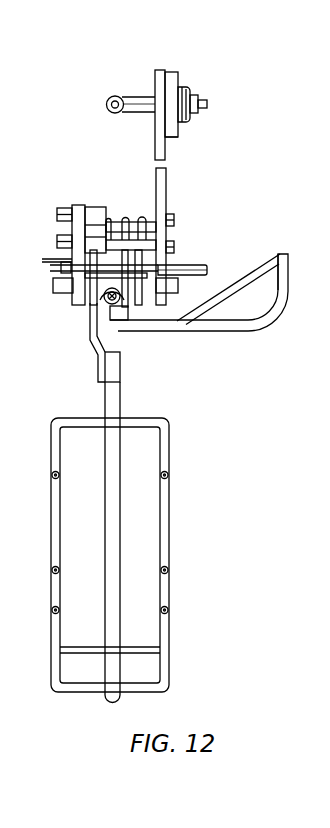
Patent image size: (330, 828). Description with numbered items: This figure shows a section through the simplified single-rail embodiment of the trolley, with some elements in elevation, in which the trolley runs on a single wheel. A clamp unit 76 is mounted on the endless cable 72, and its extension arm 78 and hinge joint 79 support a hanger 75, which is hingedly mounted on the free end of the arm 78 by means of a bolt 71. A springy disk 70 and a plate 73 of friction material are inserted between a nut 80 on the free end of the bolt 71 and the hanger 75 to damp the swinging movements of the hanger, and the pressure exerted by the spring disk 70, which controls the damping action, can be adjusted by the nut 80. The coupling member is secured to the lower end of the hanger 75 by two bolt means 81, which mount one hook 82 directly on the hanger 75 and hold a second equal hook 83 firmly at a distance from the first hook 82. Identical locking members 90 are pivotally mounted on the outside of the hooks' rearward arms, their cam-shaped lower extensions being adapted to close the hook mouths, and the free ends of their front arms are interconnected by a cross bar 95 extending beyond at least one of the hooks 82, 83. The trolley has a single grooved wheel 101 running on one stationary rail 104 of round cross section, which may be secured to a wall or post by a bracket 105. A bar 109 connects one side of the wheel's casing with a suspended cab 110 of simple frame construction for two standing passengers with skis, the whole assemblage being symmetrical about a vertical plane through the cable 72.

The springy disk 70 is at (186, 124).
The bolt 71 is at (207, 108).
The endless cable 72 is at (109, 110).
The plate of friction material 73 is at (176, 130).
The hanger 75 is at (166, 184).
The clamp unit 76 is at (130, 83).
The extension piece or arm 78 is at (138, 111).
The hinge joint 79 is at (180, 80).
The nut 80 is at (192, 93).
The bolt means 81 is at (117, 236).
The hook 82 is at (153, 257).
The hook 83 is at (46, 259).
The locking member 90 is at (70, 297).
The cross bar 95 is at (208, 266).
The wheel 101 is at (103, 299).
The rail 104 is at (113, 304).
The bracket 105 is at (239, 331).
The bar 109 is at (90, 338).
The cab 110 is at (172, 455).